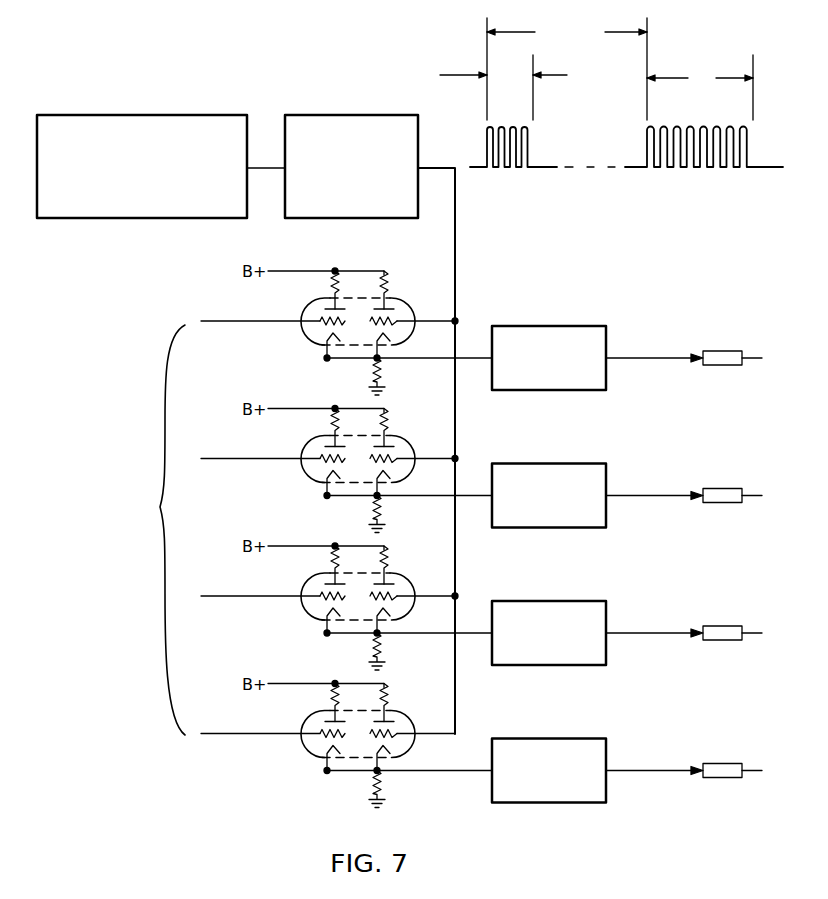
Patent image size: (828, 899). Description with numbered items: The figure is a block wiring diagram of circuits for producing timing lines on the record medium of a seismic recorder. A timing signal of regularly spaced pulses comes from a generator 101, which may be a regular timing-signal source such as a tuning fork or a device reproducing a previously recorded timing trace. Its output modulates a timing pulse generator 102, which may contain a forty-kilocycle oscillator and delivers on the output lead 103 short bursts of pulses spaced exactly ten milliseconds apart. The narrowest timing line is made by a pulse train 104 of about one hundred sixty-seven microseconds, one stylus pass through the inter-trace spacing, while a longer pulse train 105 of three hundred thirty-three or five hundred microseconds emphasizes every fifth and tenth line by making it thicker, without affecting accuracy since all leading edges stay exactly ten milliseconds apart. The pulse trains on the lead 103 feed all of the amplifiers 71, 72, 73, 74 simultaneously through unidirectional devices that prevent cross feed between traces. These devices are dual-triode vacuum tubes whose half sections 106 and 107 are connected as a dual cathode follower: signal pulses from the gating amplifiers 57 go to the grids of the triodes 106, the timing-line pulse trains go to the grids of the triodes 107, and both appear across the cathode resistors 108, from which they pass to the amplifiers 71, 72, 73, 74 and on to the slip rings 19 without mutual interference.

The generator 101 is at (115, 115).
The timing pulse generator 102 is at (330, 115).
The output lead 103 is at (456, 259).
The pulse train 104 is at (487, 137).
The longer pulse train 105 is at (647, 143).
The triode half section 106 is at (302, 340).
The triode half section 107 is at (400, 300).
The cathode resistor 108 is at (371, 376).
The amplifier 71 is at (521, 326).
The amplifier 72 is at (549, 480).
The amplifier 73 is at (549, 617).
The amplifier 74 is at (549, 755).
The slip ring 19 is at (723, 489).
The gating amplifier 57 is at (100, 530).